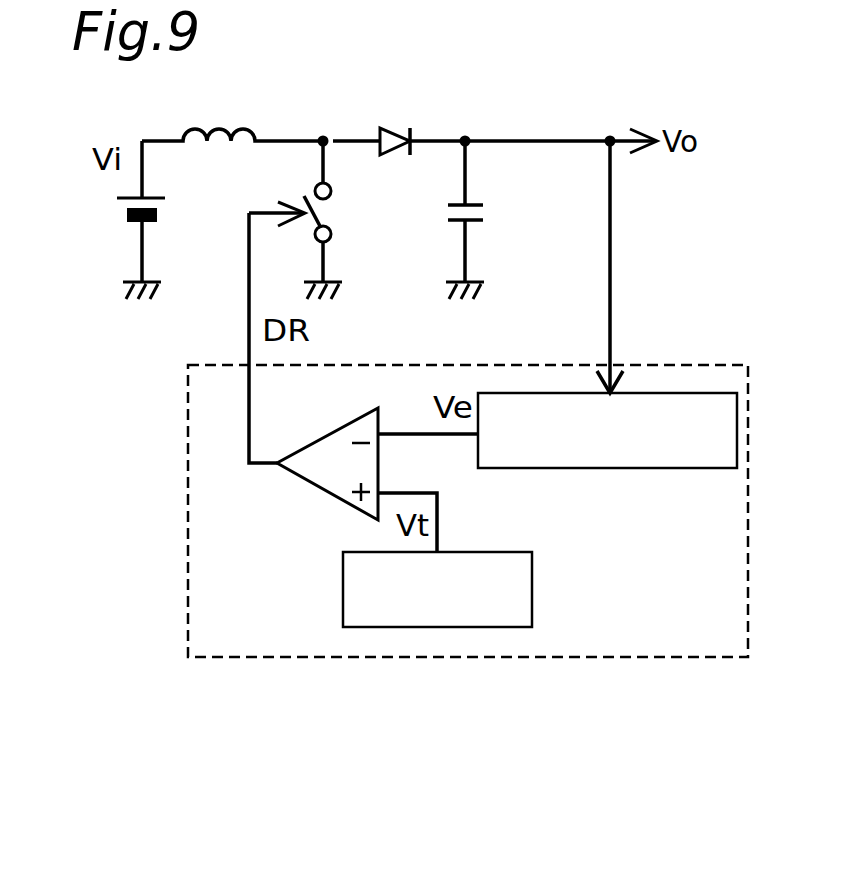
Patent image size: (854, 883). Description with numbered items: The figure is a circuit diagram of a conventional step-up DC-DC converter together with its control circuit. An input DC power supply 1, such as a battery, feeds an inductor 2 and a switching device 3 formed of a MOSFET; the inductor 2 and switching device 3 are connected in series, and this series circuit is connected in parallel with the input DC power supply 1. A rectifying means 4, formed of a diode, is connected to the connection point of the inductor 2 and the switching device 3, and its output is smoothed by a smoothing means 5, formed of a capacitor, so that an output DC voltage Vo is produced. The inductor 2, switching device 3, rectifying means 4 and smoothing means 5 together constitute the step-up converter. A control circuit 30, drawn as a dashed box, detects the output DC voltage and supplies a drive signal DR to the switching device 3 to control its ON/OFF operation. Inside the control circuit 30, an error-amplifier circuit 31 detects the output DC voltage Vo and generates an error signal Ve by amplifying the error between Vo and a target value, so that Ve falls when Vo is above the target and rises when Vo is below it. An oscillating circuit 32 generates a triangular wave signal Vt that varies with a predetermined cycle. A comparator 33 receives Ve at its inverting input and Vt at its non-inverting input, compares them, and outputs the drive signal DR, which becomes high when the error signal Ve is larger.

The input DC power supply 1 is at (132, 224).
The inductor 2 is at (255, 135).
The switching device 3 is at (333, 228).
The rectifying means 4 is at (410, 133).
The smoothing means 5 is at (448, 213).
The control circuit 30 is at (440, 365).
The error-amplifier circuit 31 is at (600, 468).
The oscillating circuit 32 is at (343, 580).
The comparator 33 is at (315, 489).